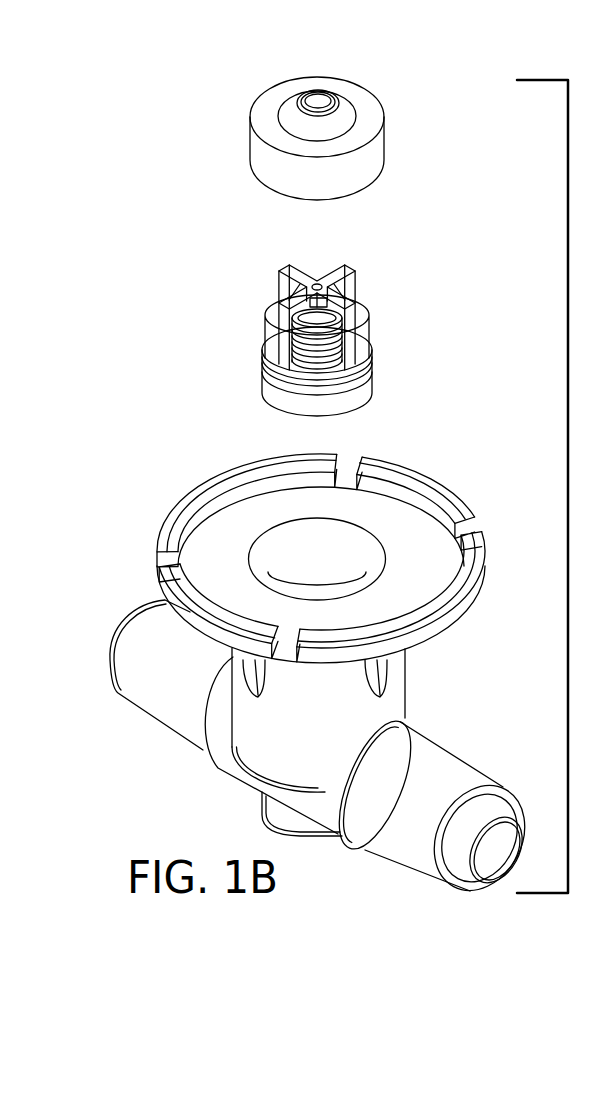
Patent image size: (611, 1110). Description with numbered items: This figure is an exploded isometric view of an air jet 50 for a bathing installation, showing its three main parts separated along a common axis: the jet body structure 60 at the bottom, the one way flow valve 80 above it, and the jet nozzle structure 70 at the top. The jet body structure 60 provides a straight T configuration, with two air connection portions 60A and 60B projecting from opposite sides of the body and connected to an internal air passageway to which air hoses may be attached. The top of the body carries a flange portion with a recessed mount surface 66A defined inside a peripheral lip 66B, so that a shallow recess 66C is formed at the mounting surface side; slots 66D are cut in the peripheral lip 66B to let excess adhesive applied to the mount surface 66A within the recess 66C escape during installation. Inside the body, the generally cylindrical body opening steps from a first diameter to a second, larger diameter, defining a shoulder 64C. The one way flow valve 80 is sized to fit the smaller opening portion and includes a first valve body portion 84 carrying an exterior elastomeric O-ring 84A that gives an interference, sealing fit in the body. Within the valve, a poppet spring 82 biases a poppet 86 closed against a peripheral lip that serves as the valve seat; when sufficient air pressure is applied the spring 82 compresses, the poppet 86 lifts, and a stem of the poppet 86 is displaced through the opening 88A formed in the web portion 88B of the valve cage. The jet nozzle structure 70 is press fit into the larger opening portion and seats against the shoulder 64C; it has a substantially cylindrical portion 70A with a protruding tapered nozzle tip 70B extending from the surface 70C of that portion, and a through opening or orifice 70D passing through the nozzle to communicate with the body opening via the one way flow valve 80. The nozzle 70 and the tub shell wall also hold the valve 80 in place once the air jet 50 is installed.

The air jet 50 is at (488, 426).
The jet body structure 60 is at (317, 667).
The air connection portion 60A is at (123, 677).
The air connection portion 60B is at (524, 804).
The shoulder 64C is at (285, 577).
The recessed mount surface 66A is at (205, 575).
The peripheral lip 66B is at (458, 510).
The shallow recess 66C is at (352, 467).
The slots 66D is at (250, 543).
The jet nozzle structure 70 is at (324, 122).
The substantially cylindrical portion 70A is at (367, 157).
The nozzle tip 70B is at (345, 112).
The surface 70C is at (368, 127).
The through opening or orifice 70D is at (315, 105).
The one way flow valve 80 is at (305, 315).
The poppet spring 82 is at (330, 338).
The first valve body portion 84 is at (329, 371).
The O-ring 84A is at (372, 373).
The poppet 86 is at (317, 317).
The opening 88A is at (317, 282).
The web portion 88B is at (287, 268).